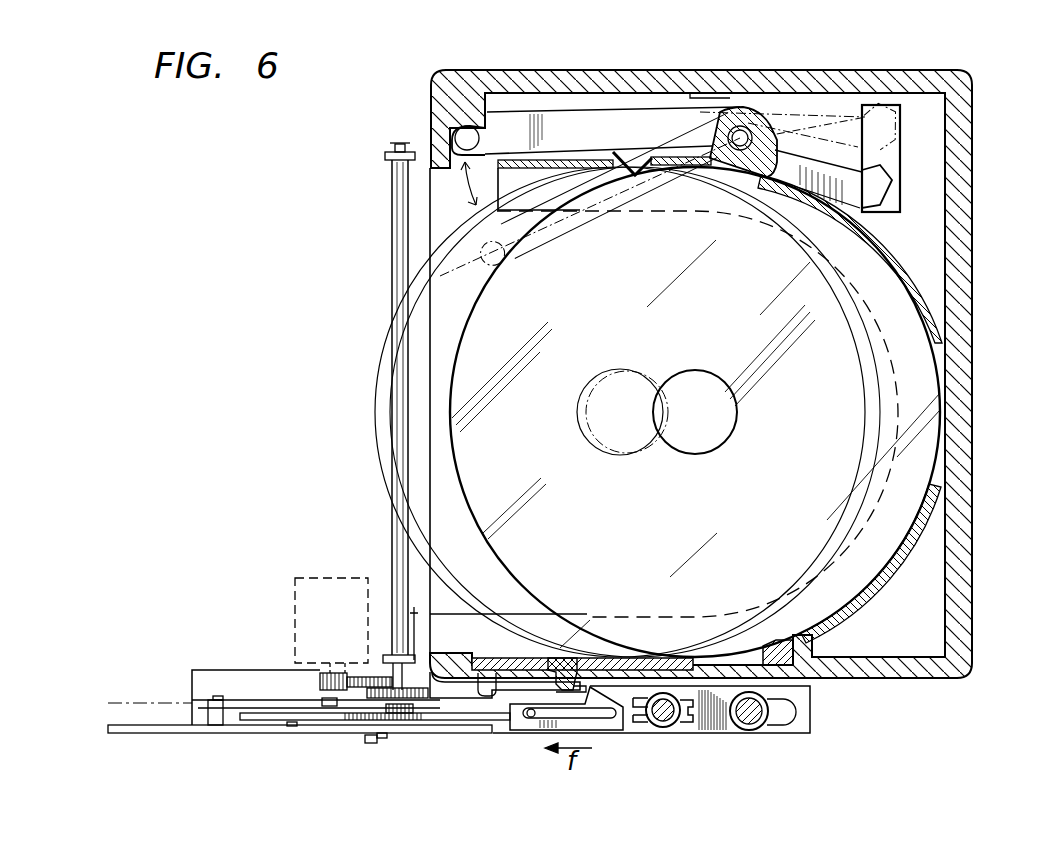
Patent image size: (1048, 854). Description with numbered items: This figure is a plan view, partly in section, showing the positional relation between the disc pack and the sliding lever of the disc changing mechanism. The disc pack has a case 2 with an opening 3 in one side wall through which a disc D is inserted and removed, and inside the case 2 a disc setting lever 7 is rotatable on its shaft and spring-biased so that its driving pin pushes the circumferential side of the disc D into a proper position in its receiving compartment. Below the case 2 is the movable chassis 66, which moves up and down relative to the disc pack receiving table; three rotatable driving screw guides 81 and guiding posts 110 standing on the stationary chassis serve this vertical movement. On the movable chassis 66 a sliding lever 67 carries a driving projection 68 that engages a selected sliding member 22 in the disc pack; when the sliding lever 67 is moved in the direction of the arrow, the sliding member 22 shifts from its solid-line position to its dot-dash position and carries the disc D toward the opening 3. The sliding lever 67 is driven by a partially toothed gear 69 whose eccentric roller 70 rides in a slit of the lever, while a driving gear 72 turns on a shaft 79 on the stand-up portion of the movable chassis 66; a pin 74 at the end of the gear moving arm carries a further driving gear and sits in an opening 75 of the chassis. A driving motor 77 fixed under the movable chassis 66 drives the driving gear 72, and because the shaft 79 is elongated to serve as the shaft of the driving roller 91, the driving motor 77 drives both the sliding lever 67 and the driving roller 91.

The case 2 is at (962, 212).
The opening 3 is at (440, 214).
The disc setting lever 7 is at (574, 130).
The sliding member 22 is at (510, 660).
The movable chassis 66 is at (642, 728).
The sliding lever 67 is at (512, 732).
The driving projection 68 is at (573, 658).
The gear 69 is at (263, 722).
The roller 70 is at (320, 701).
The driving gear 72 is at (373, 675).
The pin 74 is at (368, 740).
The opening 75 is at (382, 738).
The driving motor 77 is at (340, 577).
The shaft 79 is at (434, 672).
The driving screw guide 81 is at (675, 724).
The driving roller 91 is at (400, 278).
The guiding post 110 is at (753, 722).
The disc D is at (405, 318).